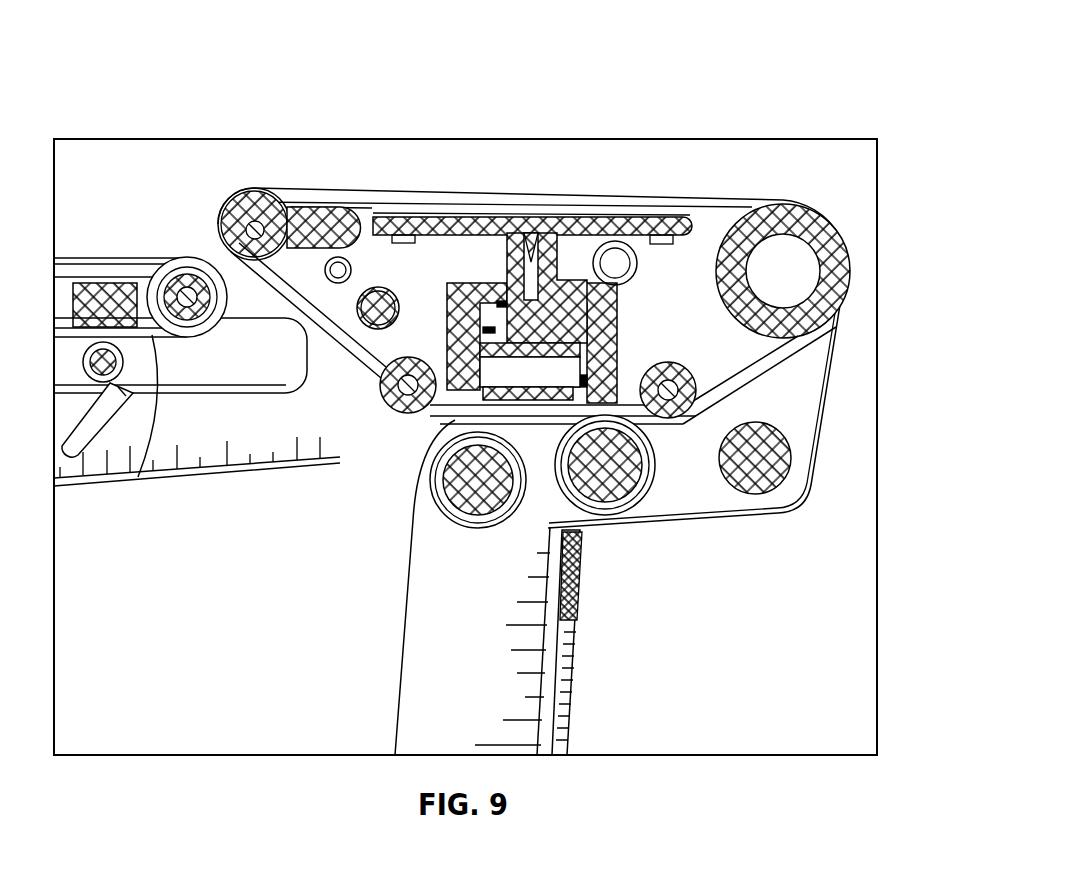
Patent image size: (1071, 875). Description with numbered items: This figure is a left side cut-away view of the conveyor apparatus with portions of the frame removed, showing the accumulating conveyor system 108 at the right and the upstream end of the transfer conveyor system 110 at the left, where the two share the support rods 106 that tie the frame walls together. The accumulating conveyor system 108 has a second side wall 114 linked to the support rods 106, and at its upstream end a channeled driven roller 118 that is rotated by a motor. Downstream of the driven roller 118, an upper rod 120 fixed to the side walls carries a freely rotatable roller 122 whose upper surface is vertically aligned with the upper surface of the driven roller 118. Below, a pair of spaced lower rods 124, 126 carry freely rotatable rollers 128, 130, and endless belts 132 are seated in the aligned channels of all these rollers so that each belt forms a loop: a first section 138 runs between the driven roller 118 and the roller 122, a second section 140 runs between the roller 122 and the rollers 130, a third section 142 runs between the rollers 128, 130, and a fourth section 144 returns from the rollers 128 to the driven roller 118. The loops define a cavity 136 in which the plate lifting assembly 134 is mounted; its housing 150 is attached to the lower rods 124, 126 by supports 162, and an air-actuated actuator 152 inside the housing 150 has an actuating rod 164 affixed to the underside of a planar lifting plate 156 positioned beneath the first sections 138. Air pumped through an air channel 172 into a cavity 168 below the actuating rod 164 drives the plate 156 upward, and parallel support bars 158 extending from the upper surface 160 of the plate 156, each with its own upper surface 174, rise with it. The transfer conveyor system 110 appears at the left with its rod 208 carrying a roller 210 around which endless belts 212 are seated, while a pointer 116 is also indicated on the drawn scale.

The support rods 106 is at (450, 495).
The accumulating conveyor system 108 is at (838, 214).
The transfer conveyor system 110 is at (151, 249).
The second side wall 114 is at (797, 393).
The slot 116 is at (340, 373).
The driven roller 118 is at (803, 237).
The upper rod 120 is at (253, 193).
The roller 122 is at (247, 232).
The lower rod 124 is at (685, 385).
The lower rod 126 is at (340, 428).
The rollers 128 is at (657, 382).
The rollers 130 is at (340, 405).
The endless belts 132 is at (735, 200).
The plate lifting assembly 134 is at (441, 271).
The cavity 136 is at (253, 330).
The first section 138 is at (343, 193).
The second section 140 is at (307, 303).
The third section 142 is at (513, 390).
The fourth section 144 is at (800, 347).
The housing 150 is at (407, 413).
The actuator 152 is at (620, 310).
The lifting plate 156 is at (635, 237).
The support bars 158 is at (590, 193).
The upper surface 160 is at (413, 213).
The supports 162 is at (440, 347).
The actuating rod 164 is at (513, 250).
The cavity 168 is at (457, 493).
The air channel 172 is at (603, 477).
The upper surface 174 is at (513, 192).
The rod 208 is at (185, 283).
The roller 210 is at (203, 277).
The endless belts 212 is at (138, 478).